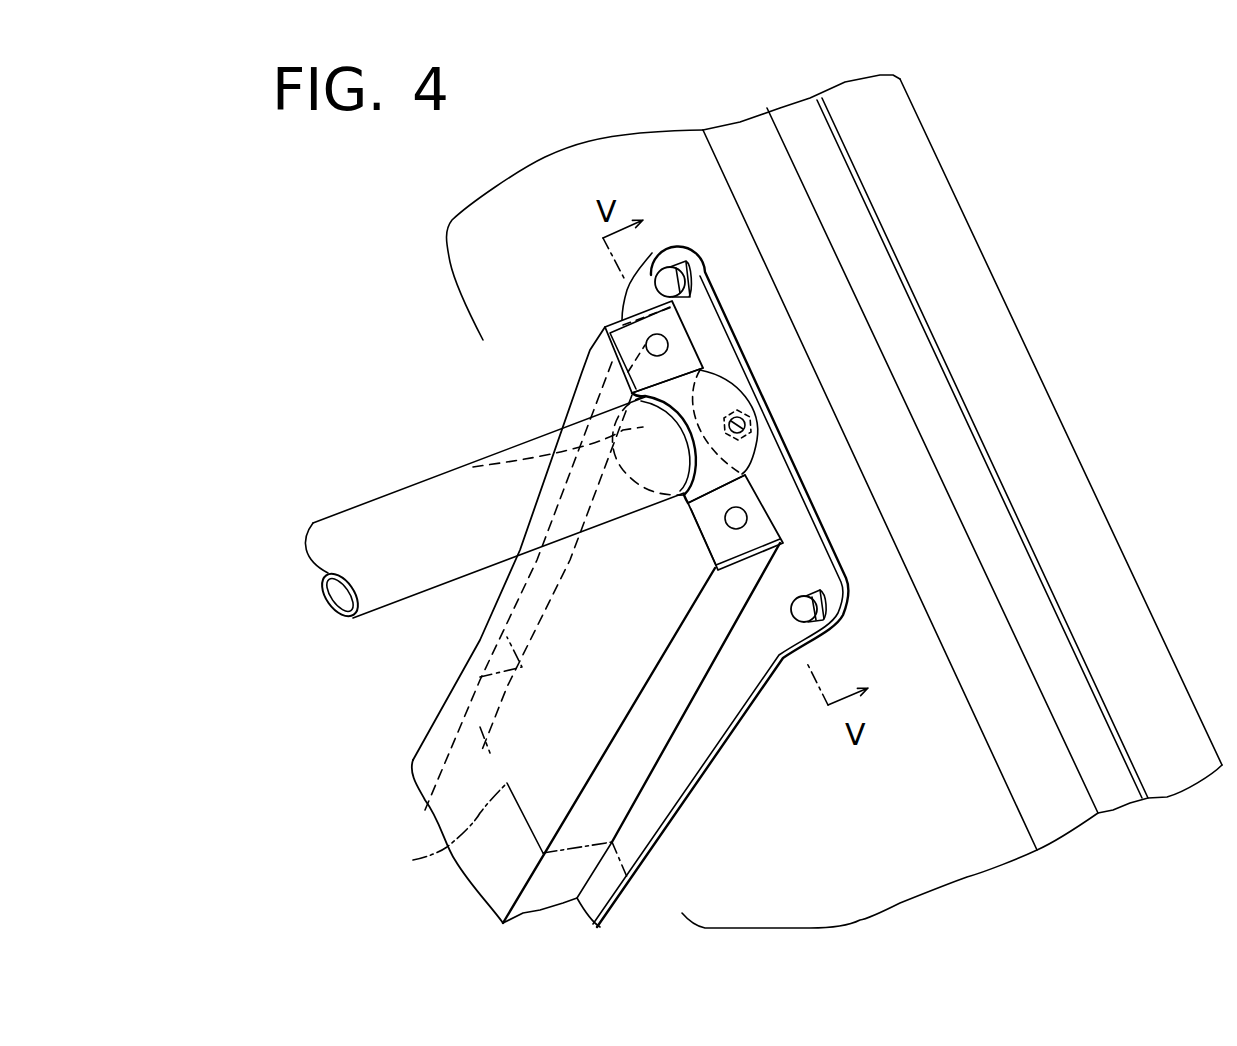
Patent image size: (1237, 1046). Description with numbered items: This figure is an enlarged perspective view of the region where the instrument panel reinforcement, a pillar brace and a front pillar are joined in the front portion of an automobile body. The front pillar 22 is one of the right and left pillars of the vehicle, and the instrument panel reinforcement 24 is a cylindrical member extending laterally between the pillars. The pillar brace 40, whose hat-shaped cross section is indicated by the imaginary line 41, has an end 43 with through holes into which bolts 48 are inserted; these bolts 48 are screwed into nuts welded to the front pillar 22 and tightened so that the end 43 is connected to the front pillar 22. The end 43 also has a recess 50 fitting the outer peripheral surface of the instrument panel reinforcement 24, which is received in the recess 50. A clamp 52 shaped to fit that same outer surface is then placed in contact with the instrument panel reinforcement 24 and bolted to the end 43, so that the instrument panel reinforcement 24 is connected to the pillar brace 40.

The front pillar 22 is at (1027, 450).
The instrument panel reinforcement 24 is at (358, 533).
The pillar brace 40 is at (428, 720).
The imaginary line 41 is at (413, 860).
The end 43 is at (577, 390).
The bolt 48 is at (652, 253).
The recess 50 is at (473, 467).
The clamp 52 is at (717, 388).